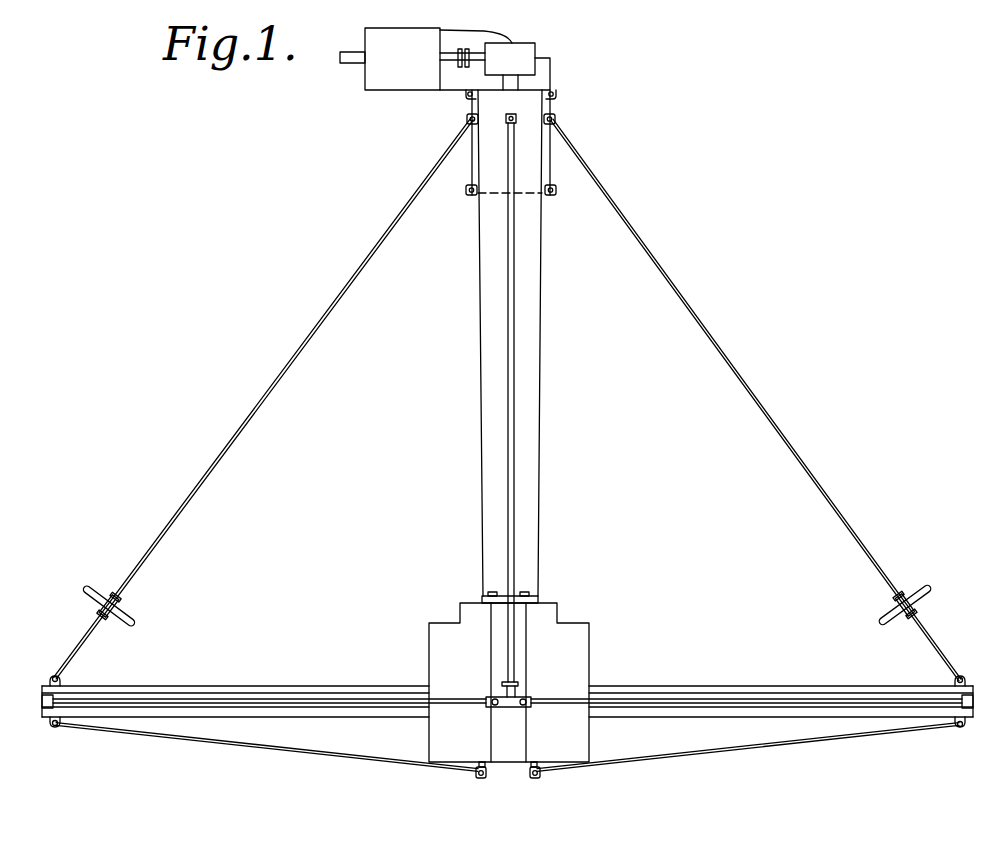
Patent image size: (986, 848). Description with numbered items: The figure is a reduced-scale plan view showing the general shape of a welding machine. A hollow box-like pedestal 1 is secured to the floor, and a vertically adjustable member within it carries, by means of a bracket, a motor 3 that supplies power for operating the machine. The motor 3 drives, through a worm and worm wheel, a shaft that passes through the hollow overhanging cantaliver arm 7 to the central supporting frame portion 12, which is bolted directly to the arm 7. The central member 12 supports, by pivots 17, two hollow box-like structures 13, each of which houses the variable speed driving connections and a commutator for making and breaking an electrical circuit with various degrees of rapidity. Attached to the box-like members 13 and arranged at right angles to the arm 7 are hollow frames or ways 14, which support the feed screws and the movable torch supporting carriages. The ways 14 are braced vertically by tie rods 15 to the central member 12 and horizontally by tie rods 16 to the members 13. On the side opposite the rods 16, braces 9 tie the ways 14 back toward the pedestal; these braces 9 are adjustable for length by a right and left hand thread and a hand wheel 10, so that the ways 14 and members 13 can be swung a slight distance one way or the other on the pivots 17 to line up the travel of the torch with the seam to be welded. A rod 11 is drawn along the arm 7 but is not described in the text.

The pedestal 1 is at (550, 92).
The motor 3 is at (403, 77).
The cantaliver arm 7 is at (527, 323).
The braces 9 is at (305, 348).
The hand wheel 10 is at (133, 616).
The rod 11 is at (512, 427).
The central supporting frame portion 12 is at (517, 613).
The hollow box-like structures 13 is at (430, 633).
The hollow frames or ways 14 is at (282, 690).
The tie rods 15 is at (212, 703).
The tie rods 16 is at (312, 755).
The pivots 17 is at (522, 707).